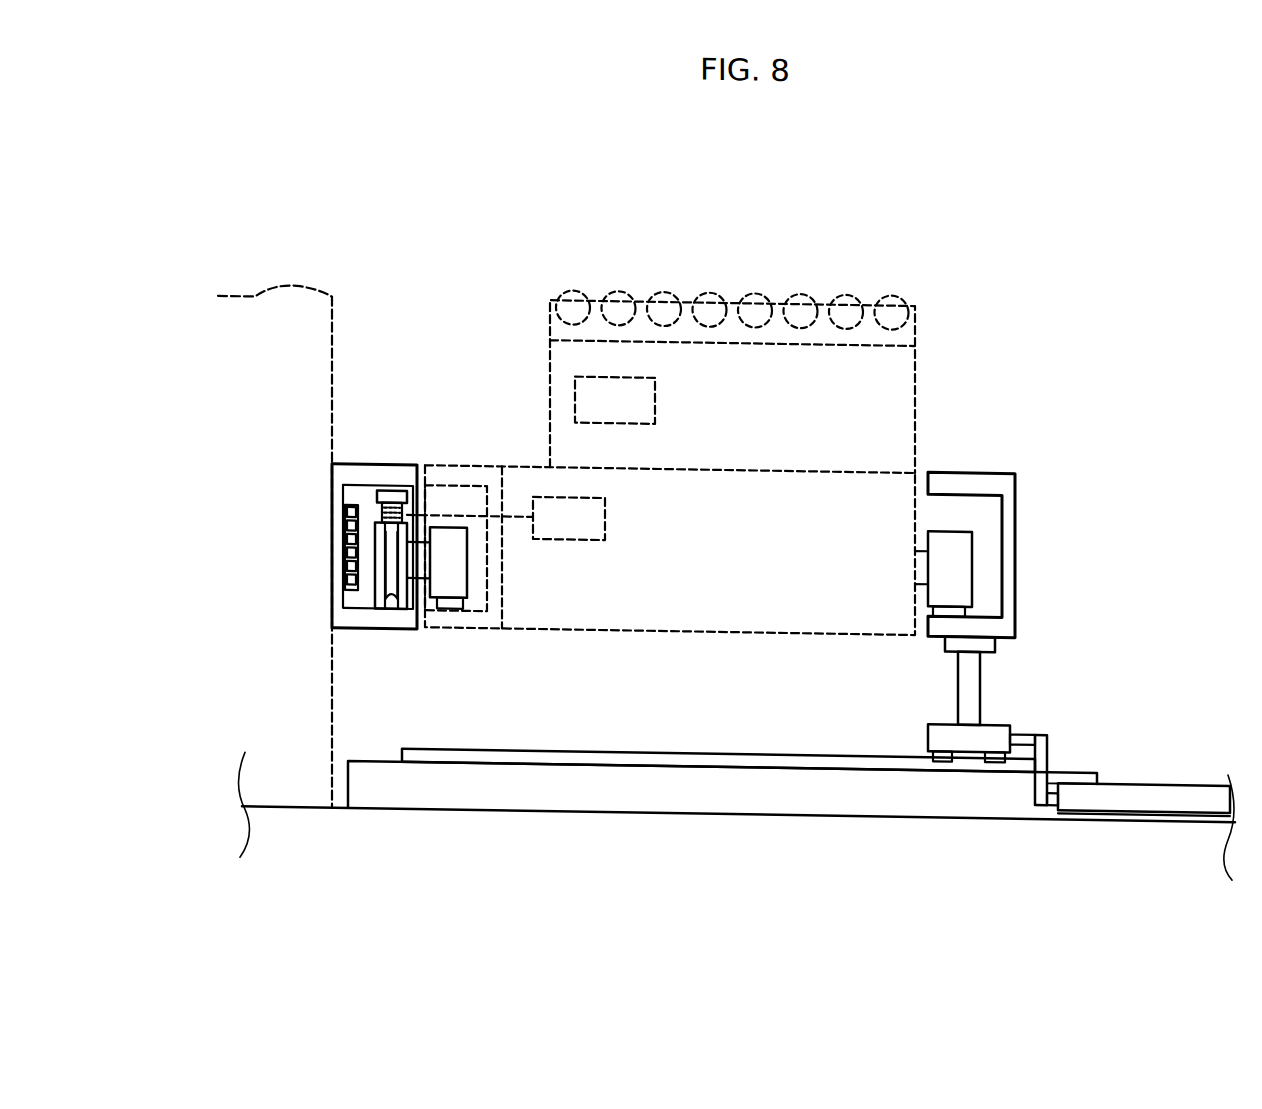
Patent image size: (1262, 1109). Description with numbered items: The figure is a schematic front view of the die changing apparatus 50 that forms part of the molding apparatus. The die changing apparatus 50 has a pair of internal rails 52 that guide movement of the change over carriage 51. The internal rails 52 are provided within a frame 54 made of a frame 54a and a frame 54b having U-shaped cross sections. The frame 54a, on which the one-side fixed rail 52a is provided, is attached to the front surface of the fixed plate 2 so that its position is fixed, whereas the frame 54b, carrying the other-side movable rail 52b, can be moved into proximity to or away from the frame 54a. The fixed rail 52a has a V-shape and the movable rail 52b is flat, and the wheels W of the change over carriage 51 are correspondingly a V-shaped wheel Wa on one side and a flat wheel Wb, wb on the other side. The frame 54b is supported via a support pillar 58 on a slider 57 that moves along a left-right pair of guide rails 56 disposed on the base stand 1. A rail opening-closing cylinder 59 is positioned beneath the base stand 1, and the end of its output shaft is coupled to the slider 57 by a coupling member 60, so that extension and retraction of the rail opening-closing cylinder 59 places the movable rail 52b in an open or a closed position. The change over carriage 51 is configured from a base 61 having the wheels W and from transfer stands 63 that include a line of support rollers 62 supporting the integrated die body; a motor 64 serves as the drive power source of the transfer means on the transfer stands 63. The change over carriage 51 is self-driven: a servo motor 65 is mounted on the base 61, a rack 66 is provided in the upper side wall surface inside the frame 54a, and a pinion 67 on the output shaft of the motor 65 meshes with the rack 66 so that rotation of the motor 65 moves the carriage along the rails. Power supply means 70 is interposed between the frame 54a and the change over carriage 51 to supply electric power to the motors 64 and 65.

The base stand 1 is at (673, 796).
The fixed plate 2 is at (252, 306).
The die changing apparatus 50 is at (512, 278).
The change over carriage 51 is at (930, 346).
The internal rails 52 is at (787, 712).
The fixed rail 52a is at (388, 594).
The movable rail 52b is at (449, 612).
The frame 54 is at (636, 497).
The one side frame 54a is at (348, 485).
The other side frame 54b is at (966, 472).
The guide rails 56 is at (790, 755).
The slider 57 is at (975, 739).
The support pillar 58 is at (972, 684).
The rail opening-closing cylinder 59 is at (1182, 788).
The coupling member 60 is at (1040, 750).
The base 61 is at (815, 591).
The support rollers 62 is at (755, 300).
The transfer stands 63 is at (865, 376).
The motor 64 is at (620, 393).
The motor for self drive 65 is at (583, 537).
The rack 66 is at (392, 500).
The pinion 67 is at (405, 519).
The power supply means 70 is at (343, 557).
The wheels W is at (670, 598).
The V-shaped wheel Wa is at (390, 581).
The flat wheel Wb is at (457, 574).
The flat wheel wb is at (958, 546).